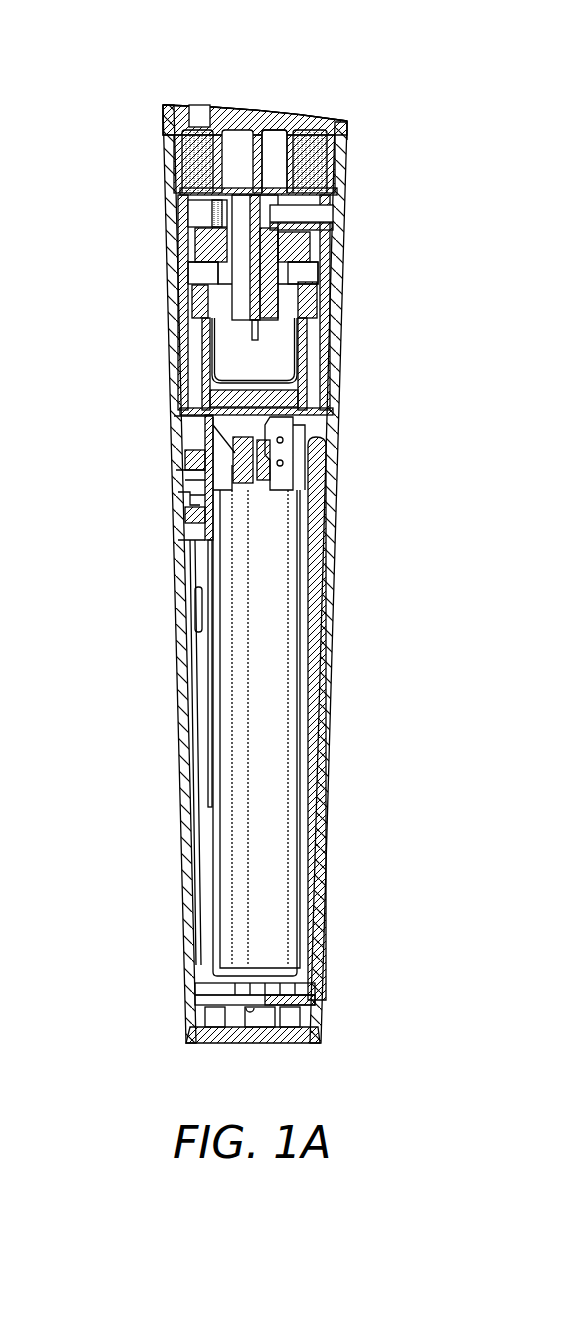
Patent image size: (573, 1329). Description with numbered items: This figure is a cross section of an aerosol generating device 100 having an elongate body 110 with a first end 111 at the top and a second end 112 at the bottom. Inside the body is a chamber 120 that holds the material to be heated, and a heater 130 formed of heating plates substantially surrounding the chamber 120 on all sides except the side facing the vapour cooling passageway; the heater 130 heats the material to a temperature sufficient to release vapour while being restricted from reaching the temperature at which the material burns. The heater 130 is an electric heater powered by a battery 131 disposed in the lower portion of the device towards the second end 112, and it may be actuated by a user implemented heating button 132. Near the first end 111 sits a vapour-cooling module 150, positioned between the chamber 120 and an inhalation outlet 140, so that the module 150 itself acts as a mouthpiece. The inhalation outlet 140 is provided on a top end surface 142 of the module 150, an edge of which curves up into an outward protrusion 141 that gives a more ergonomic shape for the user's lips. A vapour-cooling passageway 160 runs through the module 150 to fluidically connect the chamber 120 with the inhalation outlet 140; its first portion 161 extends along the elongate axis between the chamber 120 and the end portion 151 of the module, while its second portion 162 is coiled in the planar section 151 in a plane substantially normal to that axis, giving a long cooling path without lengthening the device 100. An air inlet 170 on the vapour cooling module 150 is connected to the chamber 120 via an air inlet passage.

The aerosol generating device 100 is at (405, 522).
The elongate body 110 is at (160, 583).
The first end 111 is at (167, 80).
The second end 112 is at (197, 1061).
The chamber 120 is at (228, 362).
The heater 130 is at (300, 386).
The battery 131 is at (272, 673).
The heating button 132 is at (178, 492).
The inhalation outlet 140 is at (203, 118).
The outward protrusion 141 is at (165, 118).
The end surface 142 is at (311, 118).
The vapour-cooling module 150 is at (415, 122).
The end portion 151 is at (353, 122).
The vapour-cooling passageway 160 is at (92, 152).
The first portion of vapour cooling passageway 161 is at (189, 301).
The second portion of vapour cooling passageway 162 is at (310, 160).
The air inlet 170 is at (338, 216).